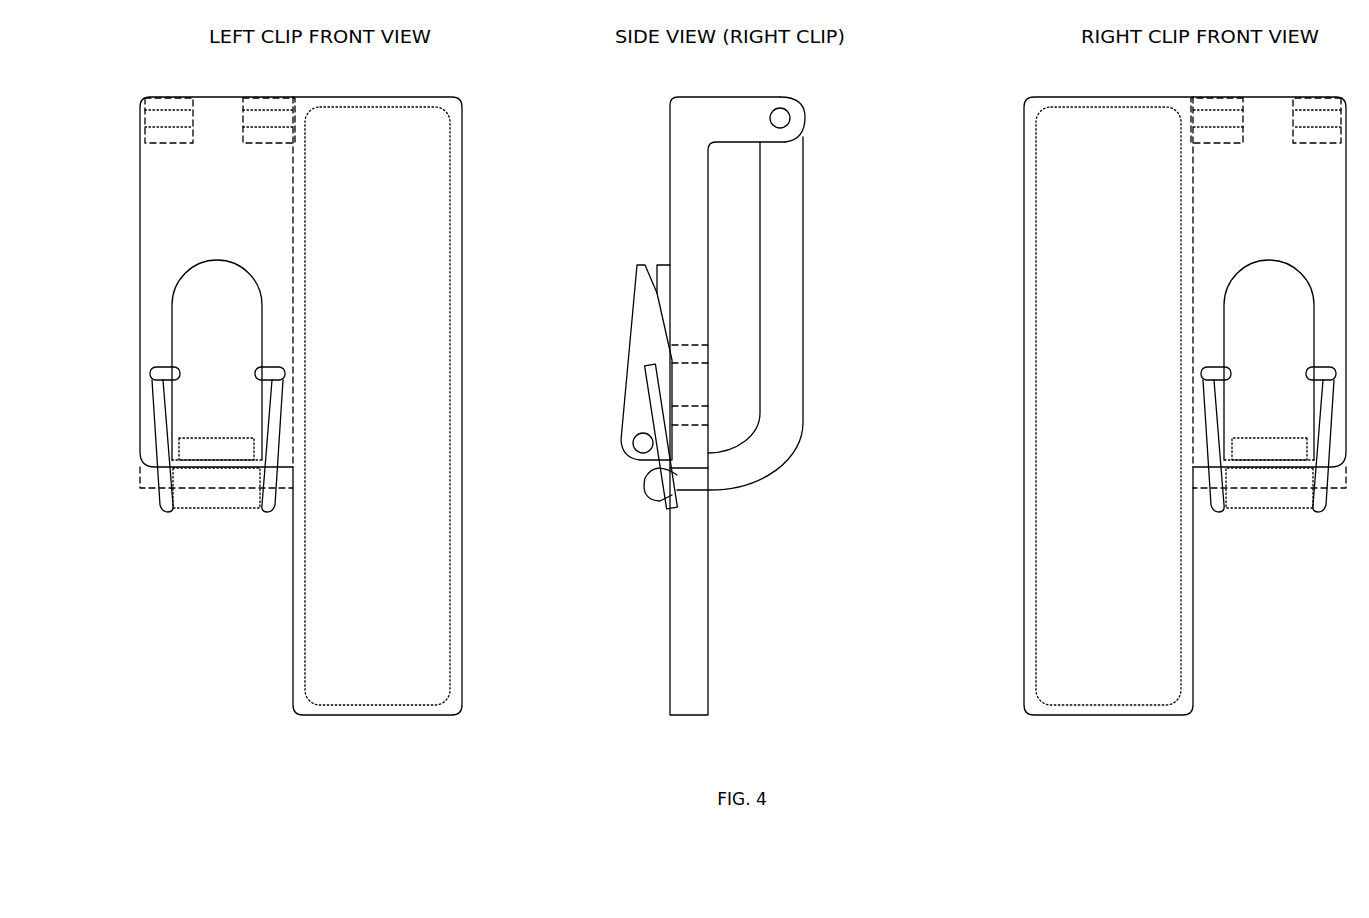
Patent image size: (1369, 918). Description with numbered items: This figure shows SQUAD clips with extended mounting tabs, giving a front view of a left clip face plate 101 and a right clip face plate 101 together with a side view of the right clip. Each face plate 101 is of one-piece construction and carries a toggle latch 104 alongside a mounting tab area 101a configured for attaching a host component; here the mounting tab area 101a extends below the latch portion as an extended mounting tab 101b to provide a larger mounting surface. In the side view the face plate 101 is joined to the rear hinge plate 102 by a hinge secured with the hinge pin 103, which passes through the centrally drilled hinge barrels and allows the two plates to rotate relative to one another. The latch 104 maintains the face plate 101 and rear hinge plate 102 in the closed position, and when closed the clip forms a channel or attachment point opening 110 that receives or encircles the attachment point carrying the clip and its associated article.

The face plate 101 is at (743, 302).
The mounting tab area 101a is at (743, 406).
The hinge extension 101b is at (743, 406).
The rear hinge plate 102 is at (741, 293).
The hinge pin 103 is at (763, 118).
The latch 104 is at (743, 386).
The attachment point opening 110 is at (734, 297).